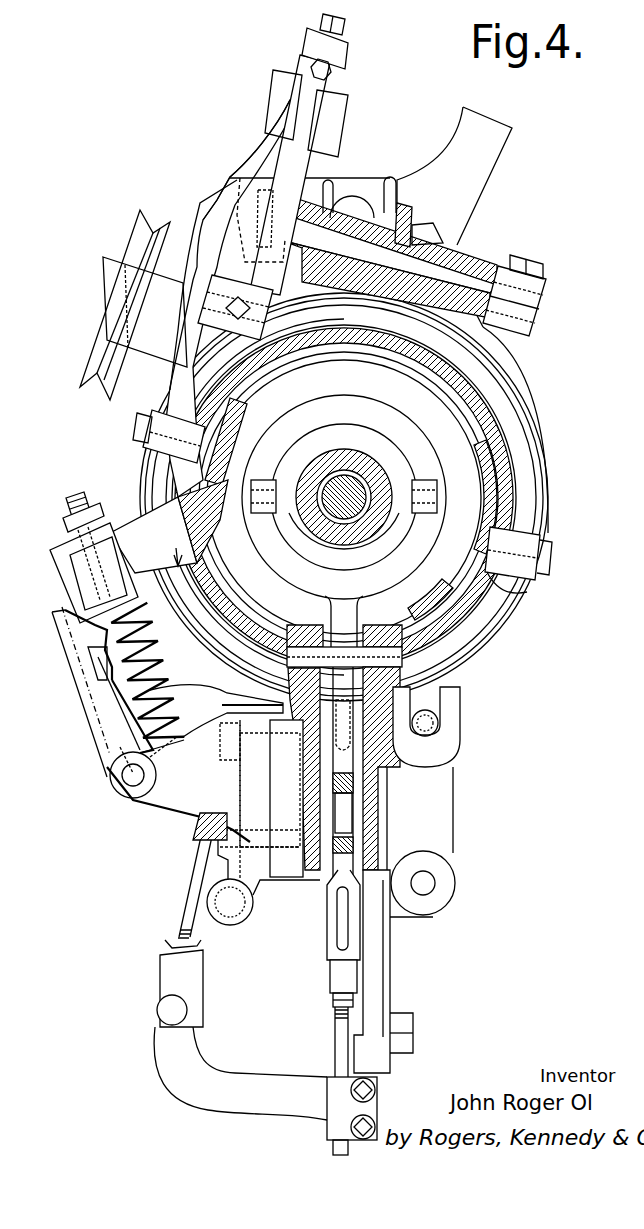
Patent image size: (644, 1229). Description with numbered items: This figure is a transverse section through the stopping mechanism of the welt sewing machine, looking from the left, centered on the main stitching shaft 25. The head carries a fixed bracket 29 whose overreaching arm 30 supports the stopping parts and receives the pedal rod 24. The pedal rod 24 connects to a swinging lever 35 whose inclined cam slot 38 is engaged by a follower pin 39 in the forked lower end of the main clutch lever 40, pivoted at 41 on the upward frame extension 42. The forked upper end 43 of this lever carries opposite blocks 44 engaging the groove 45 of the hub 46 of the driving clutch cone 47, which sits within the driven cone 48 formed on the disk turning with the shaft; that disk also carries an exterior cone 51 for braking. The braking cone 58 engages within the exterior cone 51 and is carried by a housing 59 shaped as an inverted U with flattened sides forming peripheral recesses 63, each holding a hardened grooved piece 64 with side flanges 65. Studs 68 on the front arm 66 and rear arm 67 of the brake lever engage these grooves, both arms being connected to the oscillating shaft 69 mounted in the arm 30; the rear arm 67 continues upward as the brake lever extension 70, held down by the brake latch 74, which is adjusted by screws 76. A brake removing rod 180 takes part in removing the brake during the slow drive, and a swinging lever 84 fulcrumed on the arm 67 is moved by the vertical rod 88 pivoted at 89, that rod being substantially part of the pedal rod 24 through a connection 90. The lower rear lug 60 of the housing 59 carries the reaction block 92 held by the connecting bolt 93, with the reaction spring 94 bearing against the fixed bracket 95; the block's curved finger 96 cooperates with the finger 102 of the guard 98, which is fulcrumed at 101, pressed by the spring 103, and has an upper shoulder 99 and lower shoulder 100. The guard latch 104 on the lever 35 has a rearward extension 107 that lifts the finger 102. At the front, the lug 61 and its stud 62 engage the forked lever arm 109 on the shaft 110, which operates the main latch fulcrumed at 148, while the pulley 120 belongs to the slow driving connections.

The screws 76 is at (346, 22).
The brake latch 74 is at (340, 50).
The brake lever extension 70 is at (302, 134).
The brake removing rod 180 is at (246, 160).
The overreaching arm 30 is at (465, 199).
The oscillating shaft 69 is at (460, 277).
The pulley 120 is at (132, 228).
The swinging lever 84 is at (205, 313).
The rear arm 67 is at (170, 392).
The driven cone 48 is at (329, 352).
The driving clutch cone 47 is at (344, 484).
The main stitching shaft 25 is at (362, 478).
The blocks 44 is at (344, 496).
The hub 46 is at (344, 497).
The groove 45 is at (344, 539).
The forked upper end 43 is at (344, 599).
The exterior cone 51 is at (482, 343).
The braking cone 58 is at (487, 392).
The housing 59 is at (503, 438).
The peripheral recesses 63 is at (503, 482).
The grooved piece 64 is at (492, 503).
The side flanges 65 is at (505, 518).
The front arm 66 is at (535, 537).
The studs 68 is at (515, 588).
The connecting bolt 93 is at (68, 516).
The reaction block 92 is at (58, 552).
The lug 60 is at (335, 525).
The upper shoulder 99 is at (95, 627).
The lower shoulder 100 is at (95, 650).
The guard 98 is at (97, 702).
The reaction spring 94 is at (120, 703).
The curved finger 96 is at (149, 670).
The finger 102 is at (216, 711).
The fulcrum 101 is at (123, 776).
The spring 103 is at (122, 800).
The fixed bracket 95 is at (157, 762).
The rearward extension 107 is at (260, 784).
The guard latch 104 is at (261, 800).
The pivot 41 is at (430, 674).
The frame extension 42 is at (432, 690).
The lug 61 is at (452, 700).
The stud 62 is at (432, 735).
The main clutch lever 40 is at (345, 765).
The cam slot 38 is at (348, 792).
The follower pin 39 is at (348, 818).
The lever arm 109 is at (430, 843).
The shaft 110 is at (435, 880).
The vertical rod 88 is at (190, 856).
The fulcrum 148 is at (230, 915).
The head bracket 29 is at (300, 883).
The swinging lever 35 is at (330, 870).
The pivot 89 is at (157, 1010).
The pedal rod 24 is at (338, 1042).
The link 90 is at (230, 1102).